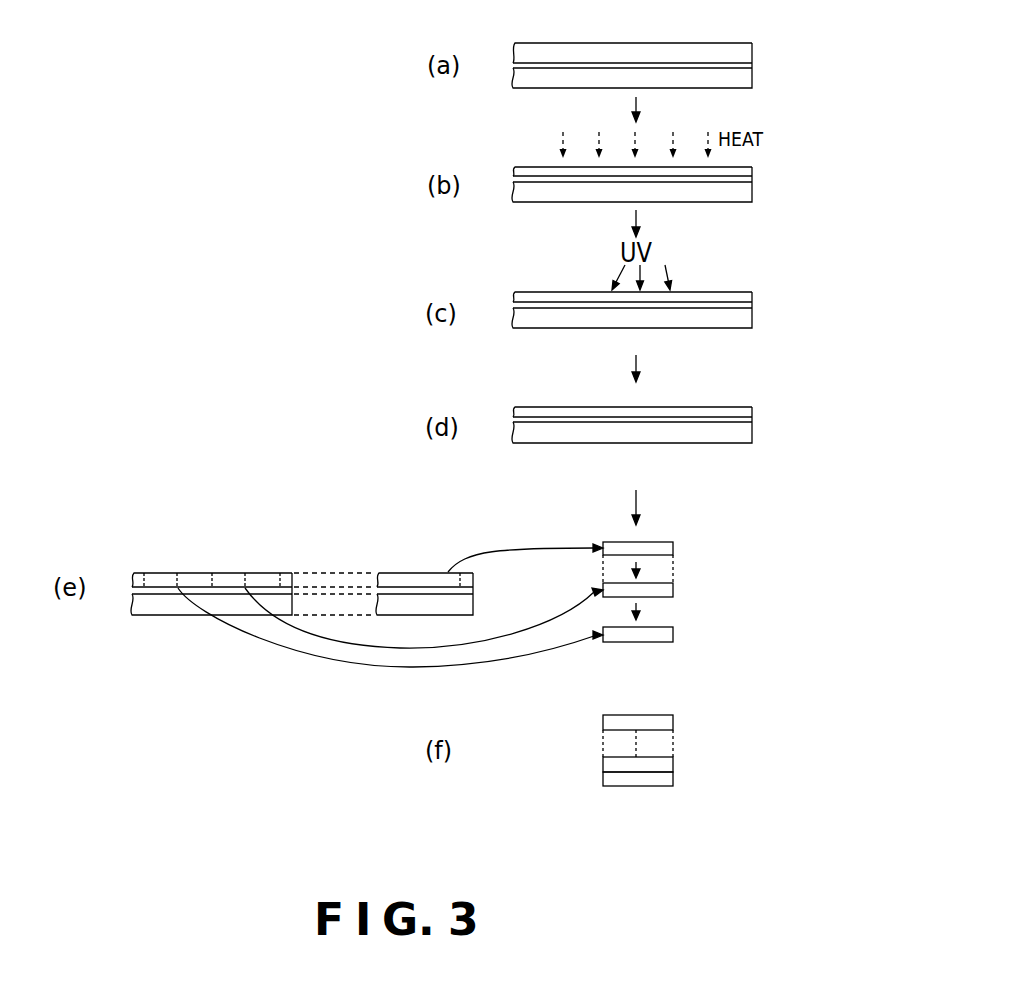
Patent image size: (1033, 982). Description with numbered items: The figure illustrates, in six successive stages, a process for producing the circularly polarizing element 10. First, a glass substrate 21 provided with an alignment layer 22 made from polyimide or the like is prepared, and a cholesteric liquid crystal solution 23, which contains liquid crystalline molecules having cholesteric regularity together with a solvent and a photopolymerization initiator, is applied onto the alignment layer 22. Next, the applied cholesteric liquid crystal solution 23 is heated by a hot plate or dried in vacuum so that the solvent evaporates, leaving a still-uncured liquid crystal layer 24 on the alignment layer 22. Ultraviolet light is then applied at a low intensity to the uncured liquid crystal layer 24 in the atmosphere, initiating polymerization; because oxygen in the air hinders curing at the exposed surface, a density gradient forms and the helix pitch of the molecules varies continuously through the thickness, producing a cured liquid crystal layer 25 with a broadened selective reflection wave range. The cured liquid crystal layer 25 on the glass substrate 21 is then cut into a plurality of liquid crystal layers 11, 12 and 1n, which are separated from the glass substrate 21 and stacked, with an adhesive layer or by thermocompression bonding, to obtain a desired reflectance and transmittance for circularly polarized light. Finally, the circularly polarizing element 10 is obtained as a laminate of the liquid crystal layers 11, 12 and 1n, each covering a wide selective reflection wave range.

The circularly polarizing element 10 is at (768, 704).
The liquid crystal layer 11 is at (183, 573).
The liquid crystal layer 12 is at (237, 573).
The liquid crystal layer 1n is at (423, 573).
The glass substrate 21 is at (745, 78).
The alignment layer 22 is at (752, 66).
The cholesteric liquid crystal solution 23 is at (743, 53).
The uncured liquid crystal layer 24 is at (745, 172).
The cured liquid crystal layer 25 is at (745, 412).